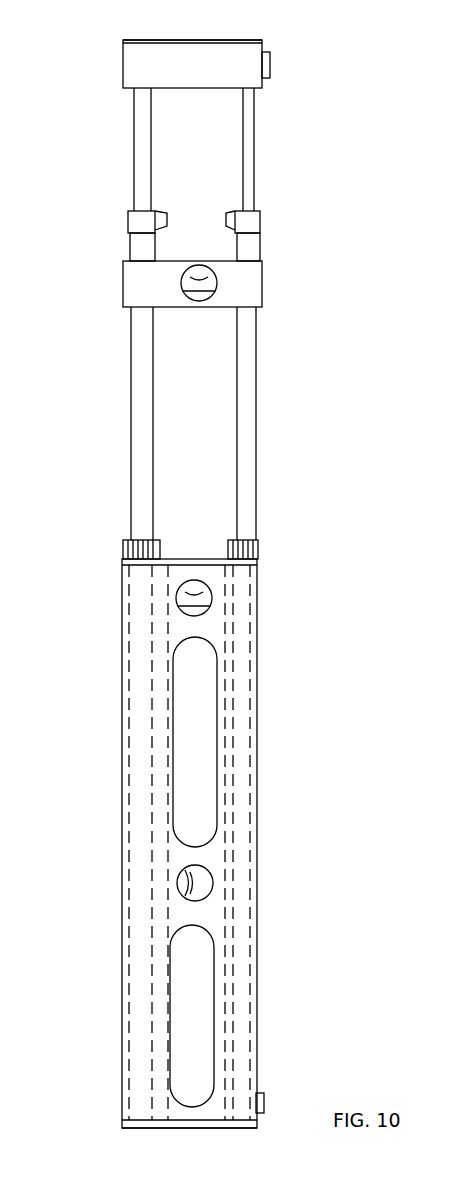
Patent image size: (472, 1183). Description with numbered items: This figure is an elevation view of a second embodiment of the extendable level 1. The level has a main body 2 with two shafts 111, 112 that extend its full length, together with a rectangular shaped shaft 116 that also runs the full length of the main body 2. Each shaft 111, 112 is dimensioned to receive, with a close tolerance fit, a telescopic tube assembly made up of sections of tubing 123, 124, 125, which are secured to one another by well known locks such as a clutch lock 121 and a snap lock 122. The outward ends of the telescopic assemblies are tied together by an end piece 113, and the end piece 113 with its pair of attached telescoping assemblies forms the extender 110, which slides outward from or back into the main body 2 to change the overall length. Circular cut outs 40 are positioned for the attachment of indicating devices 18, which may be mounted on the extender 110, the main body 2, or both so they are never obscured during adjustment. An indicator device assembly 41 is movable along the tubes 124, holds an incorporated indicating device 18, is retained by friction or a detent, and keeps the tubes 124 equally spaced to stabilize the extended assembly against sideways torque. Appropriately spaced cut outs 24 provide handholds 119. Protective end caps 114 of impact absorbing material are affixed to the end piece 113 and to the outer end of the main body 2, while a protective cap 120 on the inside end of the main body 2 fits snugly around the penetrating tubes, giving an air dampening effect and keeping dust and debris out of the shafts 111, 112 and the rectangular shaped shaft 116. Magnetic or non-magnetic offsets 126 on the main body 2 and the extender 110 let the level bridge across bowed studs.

The telescoping post assembly 1 is at (120, 873).
The main body 2 is at (120, 600).
The indicating device 18 is at (200, 300).
The cut out 24 is at (218, 763).
The circular cut out 40 is at (187, 272).
The indicator device assembly 41 is at (262, 278).
The extender 110 is at (262, 40).
The shaft 111 is at (130, 705).
The shaft 112 is at (257, 1000).
The end piece 113 is at (123, 67).
The protective end cap 114 is at (123, 41).
The rectangular shaped shaft 116 is at (212, 852).
The handhold 119 is at (195, 718).
The protective cap 120 is at (122, 560).
The clutch lock 121 is at (260, 552).
The snap lock 122 is at (258, 222).
The section of tubing 123 is at (257, 128).
The section of tubing 124 is at (256, 397).
The section of tubing 125 is at (242, 1038).
The offset 126 is at (270, 62).